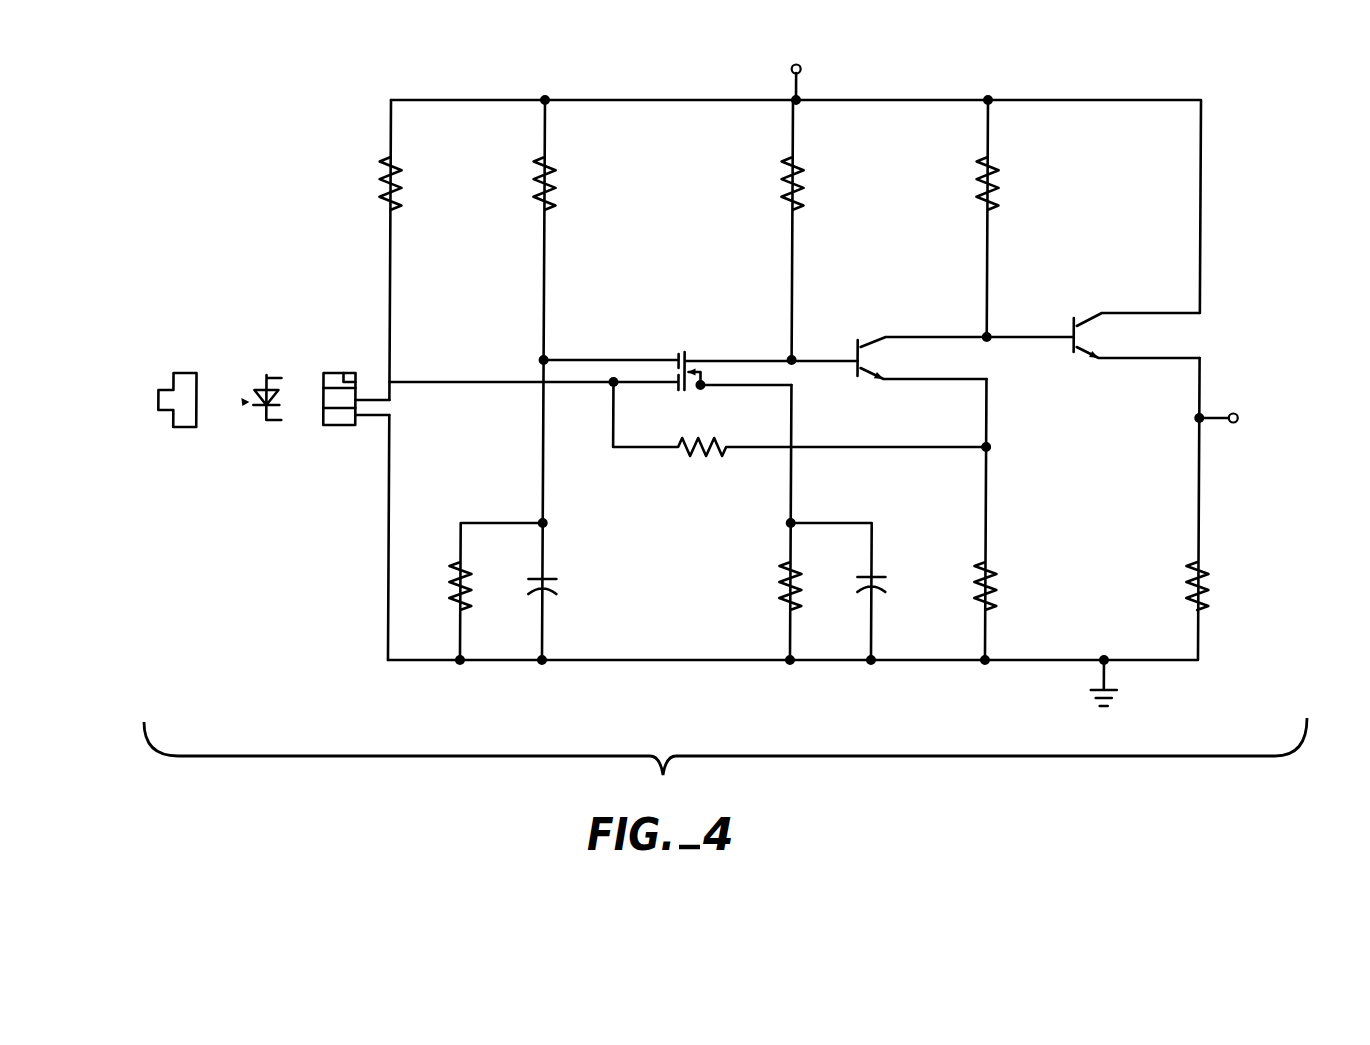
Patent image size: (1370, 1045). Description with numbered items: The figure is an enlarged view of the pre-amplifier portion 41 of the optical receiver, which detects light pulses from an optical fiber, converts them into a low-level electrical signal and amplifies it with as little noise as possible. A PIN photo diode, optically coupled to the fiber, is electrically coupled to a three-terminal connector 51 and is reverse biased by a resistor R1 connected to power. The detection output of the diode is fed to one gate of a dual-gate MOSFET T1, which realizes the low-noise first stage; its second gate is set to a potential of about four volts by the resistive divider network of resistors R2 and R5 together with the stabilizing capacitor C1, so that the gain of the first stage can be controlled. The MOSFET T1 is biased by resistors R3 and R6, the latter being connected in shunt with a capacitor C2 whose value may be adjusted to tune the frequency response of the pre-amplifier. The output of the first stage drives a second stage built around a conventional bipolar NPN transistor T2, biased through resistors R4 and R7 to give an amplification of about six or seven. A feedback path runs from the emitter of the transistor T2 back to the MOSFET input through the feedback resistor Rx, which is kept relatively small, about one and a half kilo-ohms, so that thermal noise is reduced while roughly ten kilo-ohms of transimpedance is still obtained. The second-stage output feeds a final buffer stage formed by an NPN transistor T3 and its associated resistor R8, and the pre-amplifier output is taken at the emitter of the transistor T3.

The pre-amplifier portion 41 is at (730, 367).
The three-terminal connector 51 is at (337, 373).
The resistor R1 is at (368, 183).
The resistor R2 is at (522, 230).
The resistor R3 is at (771, 230).
The resistor R4 is at (965, 218).
The resistor R5 is at (476, 591).
The resistor R6 is at (768, 522).
The resistor R7 is at (964, 519).
The resistor R8 is at (1176, 509).
The feedback resistor Rx is at (800, 437).
The stabilizing capacitor C1 is at (524, 510).
The capacitor C2 is at (838, 591).
The dual-gate MOSFET T1 is at (623, 359).
The bipolar NPN transistor T2 is at (949, 354).
The NPN transistor T3 is at (1117, 332).